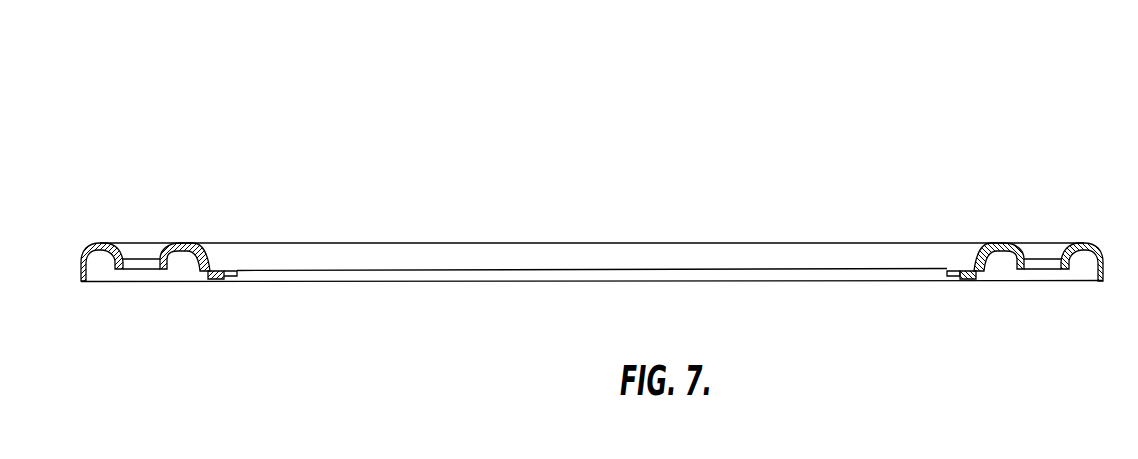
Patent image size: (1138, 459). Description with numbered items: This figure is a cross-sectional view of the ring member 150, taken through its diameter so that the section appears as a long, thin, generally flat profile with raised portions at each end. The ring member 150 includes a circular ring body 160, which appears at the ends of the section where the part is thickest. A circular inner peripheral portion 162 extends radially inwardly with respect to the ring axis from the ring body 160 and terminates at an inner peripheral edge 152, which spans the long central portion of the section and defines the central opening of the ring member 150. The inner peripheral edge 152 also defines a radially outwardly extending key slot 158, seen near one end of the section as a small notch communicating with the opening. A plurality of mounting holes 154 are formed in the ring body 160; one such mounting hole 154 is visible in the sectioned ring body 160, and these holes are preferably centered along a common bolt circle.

The ring member 150 is at (698, 127).
The inner peripheral edge 152 is at (452, 281).
The mounting hole 154 is at (1032, 262).
The key slot 158 is at (953, 278).
The ring body 160 is at (1048, 243).
The inner peripheral portion 162 is at (213, 281).